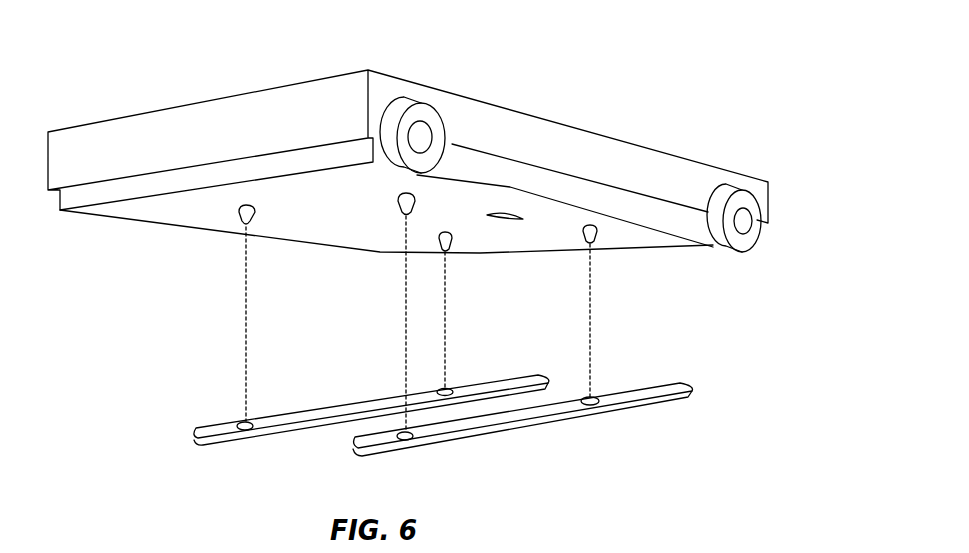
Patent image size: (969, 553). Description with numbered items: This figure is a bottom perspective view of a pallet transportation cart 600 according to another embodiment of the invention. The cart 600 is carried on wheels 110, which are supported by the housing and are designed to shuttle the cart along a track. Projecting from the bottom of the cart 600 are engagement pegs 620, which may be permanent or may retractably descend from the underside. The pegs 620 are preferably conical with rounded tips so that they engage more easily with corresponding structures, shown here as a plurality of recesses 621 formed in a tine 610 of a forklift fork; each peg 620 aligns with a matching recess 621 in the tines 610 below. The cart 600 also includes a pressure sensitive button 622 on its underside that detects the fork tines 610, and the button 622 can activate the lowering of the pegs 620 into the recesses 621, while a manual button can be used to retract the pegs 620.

The pallet transportation cart 600 is at (580, 57).
The wheel 110 is at (420, 113).
The engagement peg 620 is at (245, 220).
The pressure sensitive button 622 is at (508, 218).
The tine 610 is at (357, 407).
The recess 621 is at (240, 423).